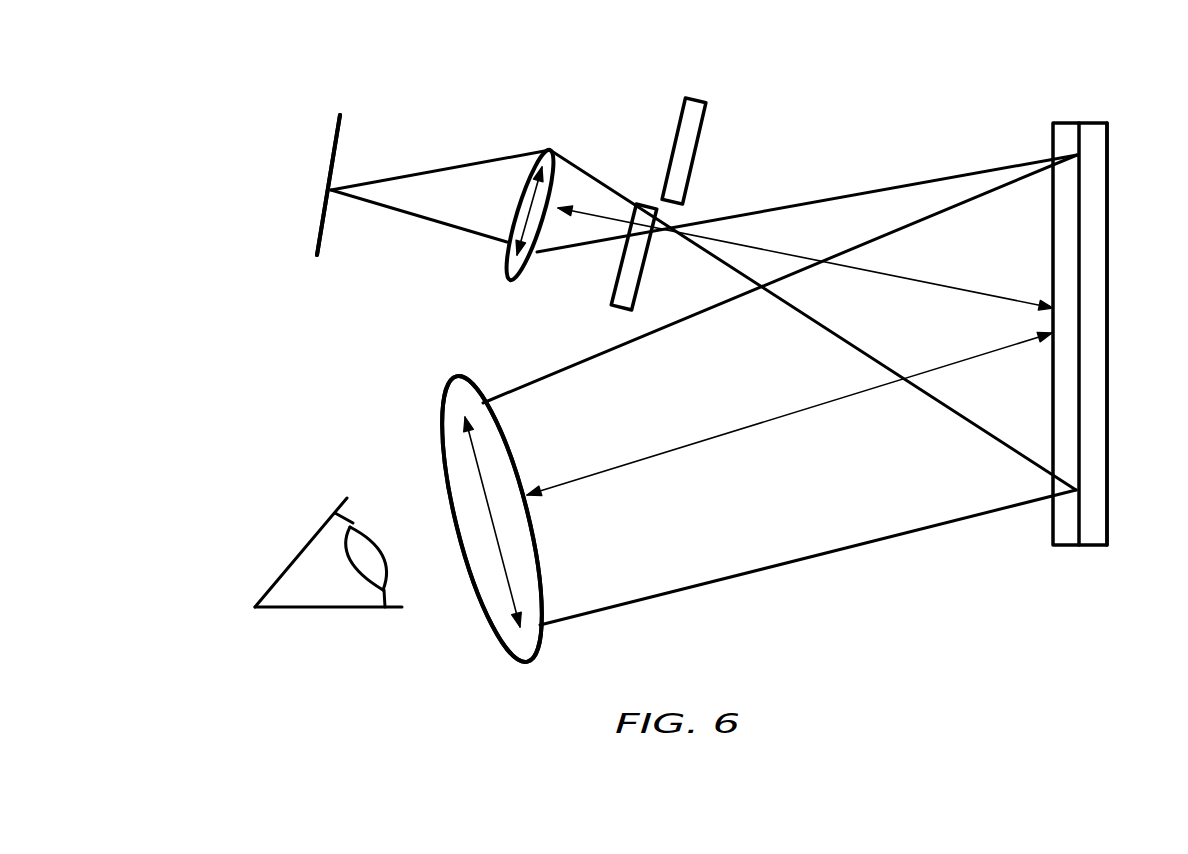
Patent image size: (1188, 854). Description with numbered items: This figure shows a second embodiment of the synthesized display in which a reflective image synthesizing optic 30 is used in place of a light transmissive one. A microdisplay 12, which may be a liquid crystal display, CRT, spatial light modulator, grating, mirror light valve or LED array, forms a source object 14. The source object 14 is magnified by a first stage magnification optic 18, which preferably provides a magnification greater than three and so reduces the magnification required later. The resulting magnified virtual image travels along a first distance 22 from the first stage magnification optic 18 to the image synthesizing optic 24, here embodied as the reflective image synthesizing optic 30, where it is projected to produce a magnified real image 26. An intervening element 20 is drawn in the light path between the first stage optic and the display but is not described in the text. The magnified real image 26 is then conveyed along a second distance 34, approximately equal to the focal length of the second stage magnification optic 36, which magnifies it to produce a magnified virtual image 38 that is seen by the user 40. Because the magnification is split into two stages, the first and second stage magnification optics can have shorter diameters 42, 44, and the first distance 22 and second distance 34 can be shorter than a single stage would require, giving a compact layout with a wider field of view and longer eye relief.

The microdisplay 12 is at (338, 128).
The source object 14 is at (333, 153).
The first stage magnification optic 18 is at (520, 183).
The aperture stop / slit 20 is at (705, 113).
The first distance 22 is at (955, 288).
The image synthesizing optic 24 is at (1103, 460).
The magnified real image 26 is at (1080, 215).
The reflective image synthesizing optic 30 is at (1067, 123).
The second distance 34 is at (789, 413).
The second stage magnification optic 36 is at (453, 377).
The magnified virtual image 38 is at (452, 462).
The user 40 is at (305, 547).
The diameter of first stage magnification optic 42 is at (517, 235).
The diameter of second stage magnification optic 44 is at (477, 460).